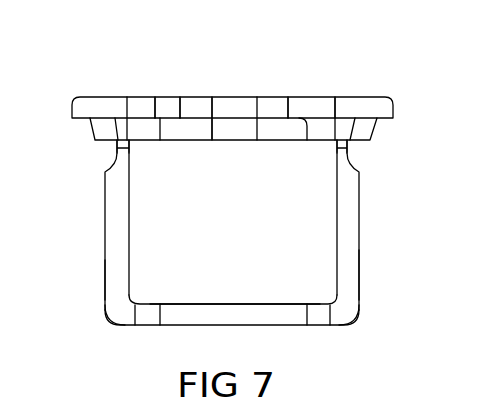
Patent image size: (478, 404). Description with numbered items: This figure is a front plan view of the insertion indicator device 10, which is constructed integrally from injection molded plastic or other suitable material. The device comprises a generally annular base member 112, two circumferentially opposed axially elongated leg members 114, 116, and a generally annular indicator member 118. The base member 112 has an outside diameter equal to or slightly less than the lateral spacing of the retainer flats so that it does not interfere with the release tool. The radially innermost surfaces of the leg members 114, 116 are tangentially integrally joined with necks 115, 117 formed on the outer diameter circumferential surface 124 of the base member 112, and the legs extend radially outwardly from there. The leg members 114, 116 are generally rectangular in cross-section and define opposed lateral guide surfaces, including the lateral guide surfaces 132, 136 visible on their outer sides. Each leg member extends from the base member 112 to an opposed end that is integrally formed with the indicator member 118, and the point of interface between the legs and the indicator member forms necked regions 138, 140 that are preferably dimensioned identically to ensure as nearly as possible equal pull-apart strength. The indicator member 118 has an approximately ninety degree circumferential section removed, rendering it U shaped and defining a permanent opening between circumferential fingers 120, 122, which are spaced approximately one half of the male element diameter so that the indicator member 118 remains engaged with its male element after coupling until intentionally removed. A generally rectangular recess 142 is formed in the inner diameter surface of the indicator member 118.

The insertion indicator device 10 is at (79, 89).
The base member 112 is at (222, 318).
The leg member 114 is at (345, 227).
The neck 115 is at (348, 322).
The leg member 116 is at (117, 223).
The neck 117 is at (118, 323).
The indicator member 118 is at (358, 107).
The circumferential finger 120 is at (165, 112).
The circumferential finger 122 is at (290, 110).
The outer diameter circumferential surface 124 is at (268, 312).
The lateral guide surface 132 is at (117, 278).
The lateral guide surface 136 is at (347, 273).
The necked region 138 is at (348, 150).
The necked region 140 is at (118, 148).
The rectangular recess 142 is at (212, 100).